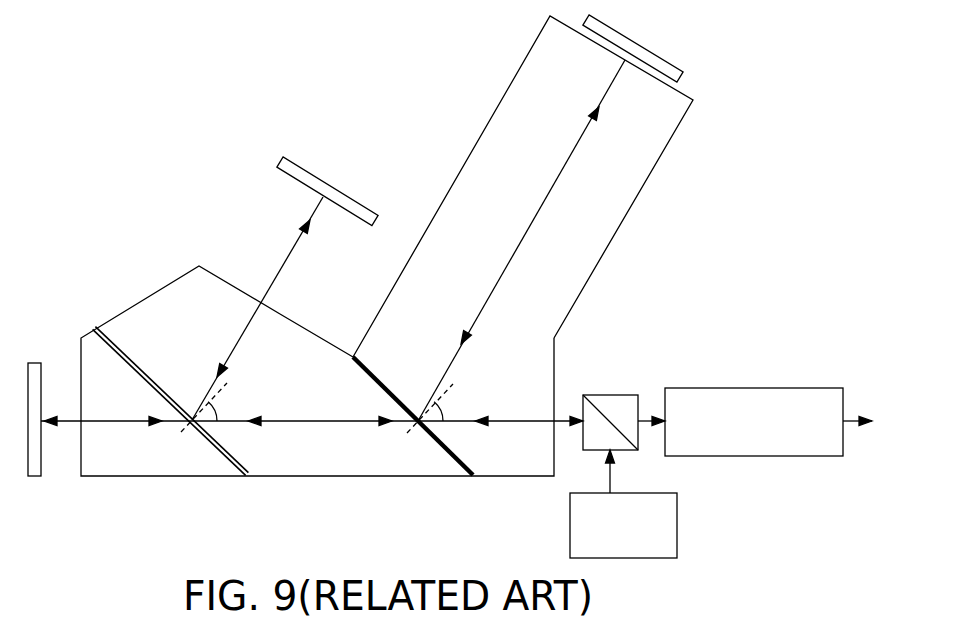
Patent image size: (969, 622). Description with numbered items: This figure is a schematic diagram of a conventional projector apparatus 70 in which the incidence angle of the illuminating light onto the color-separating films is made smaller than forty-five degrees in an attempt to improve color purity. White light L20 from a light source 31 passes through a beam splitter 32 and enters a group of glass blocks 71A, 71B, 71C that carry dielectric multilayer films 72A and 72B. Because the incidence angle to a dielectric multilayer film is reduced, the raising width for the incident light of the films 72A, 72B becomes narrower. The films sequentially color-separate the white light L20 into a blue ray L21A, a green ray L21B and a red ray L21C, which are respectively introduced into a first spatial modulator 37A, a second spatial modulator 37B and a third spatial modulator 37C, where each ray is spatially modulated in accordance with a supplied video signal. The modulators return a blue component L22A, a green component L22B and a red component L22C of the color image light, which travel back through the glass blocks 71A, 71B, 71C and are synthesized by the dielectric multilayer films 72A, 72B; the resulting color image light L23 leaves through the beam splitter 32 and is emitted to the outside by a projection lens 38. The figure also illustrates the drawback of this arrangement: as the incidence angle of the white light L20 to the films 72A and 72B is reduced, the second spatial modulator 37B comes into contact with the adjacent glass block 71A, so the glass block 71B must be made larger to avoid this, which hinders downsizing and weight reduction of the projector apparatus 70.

The projection display apparatus (related art) 70 is at (827, 516).
The light source 31 is at (678, 515).
The beam splitter 32 is at (625, 395).
The projection lens 38 is at (738, 388).
The first spatial modulator 37A is at (628, 30).
The second spatial modulator 37B is at (313, 173).
The third spatial modulator 37C is at (33, 360).
The glass block 71A is at (612, 220).
The glass block 71B is at (367, 473).
The prism (C) 71C is at (187, 470).
The dielectric multilayer film 72A is at (473, 473).
The dielectric multilayer film 72B is at (245, 473).
The white light L20 is at (612, 475).
The color image light L23 is at (850, 415).
The blue ray L21A is at (616, 240).
The blue component L22A is at (603, 102).
The green ray L21B is at (229, 308).
The green component L22B is at (282, 255).
The red ray L21C is at (116, 471).
The red component L22C is at (103, 422).